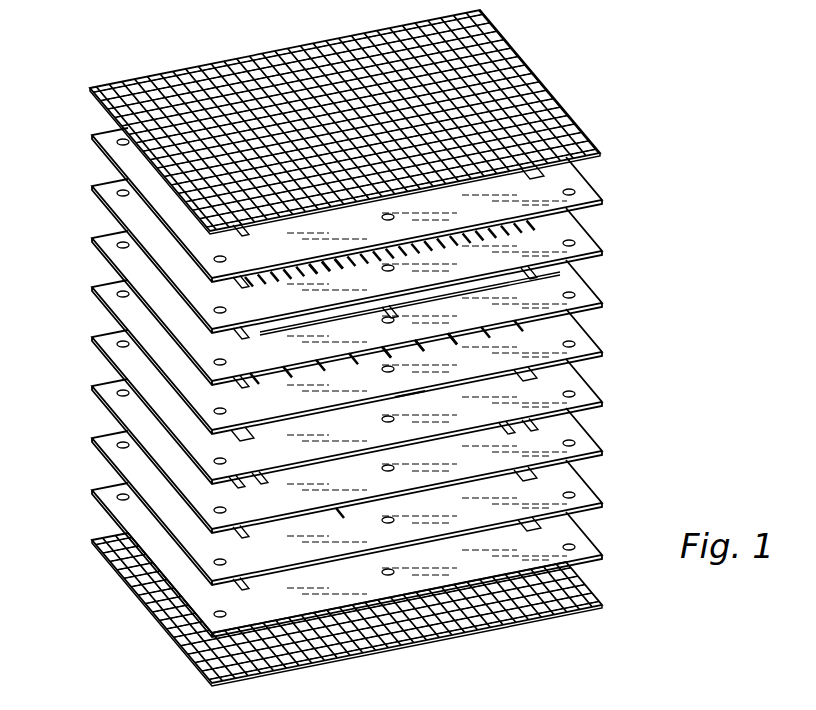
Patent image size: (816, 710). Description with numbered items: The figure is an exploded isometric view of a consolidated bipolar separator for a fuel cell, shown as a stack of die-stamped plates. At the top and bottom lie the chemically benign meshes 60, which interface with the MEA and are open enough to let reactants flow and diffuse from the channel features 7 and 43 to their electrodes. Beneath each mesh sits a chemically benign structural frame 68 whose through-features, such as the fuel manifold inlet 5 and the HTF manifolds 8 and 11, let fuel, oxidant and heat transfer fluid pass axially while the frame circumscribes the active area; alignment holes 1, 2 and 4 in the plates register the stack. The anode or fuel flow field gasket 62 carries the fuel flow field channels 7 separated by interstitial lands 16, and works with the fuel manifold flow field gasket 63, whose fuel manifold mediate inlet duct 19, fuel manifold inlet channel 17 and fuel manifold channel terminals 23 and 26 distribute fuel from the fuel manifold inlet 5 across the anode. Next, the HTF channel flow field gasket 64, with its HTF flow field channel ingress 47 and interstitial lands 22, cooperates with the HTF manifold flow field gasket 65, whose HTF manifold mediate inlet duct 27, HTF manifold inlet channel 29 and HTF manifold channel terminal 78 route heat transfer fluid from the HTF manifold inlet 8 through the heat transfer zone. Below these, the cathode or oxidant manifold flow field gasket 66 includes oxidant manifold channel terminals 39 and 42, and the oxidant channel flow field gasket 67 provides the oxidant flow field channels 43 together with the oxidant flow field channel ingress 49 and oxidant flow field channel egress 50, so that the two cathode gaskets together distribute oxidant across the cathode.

The chemically benign mesh 60 is at (115, 85).
The chemically benign structural frame 68 is at (92, 138).
The fuel flow field gasket 62 is at (92, 187).
The fuel manifold flow field gasket 63 is at (92, 240).
The HTF channel flow field gasket 64 is at (92, 288).
The HTF manifold flow field gasket 65 is at (92, 338).
The oxidant manifold flow field gasket 66 is at (92, 387).
The oxidant channel flow field gasket 67 is at (92, 438).
The alignment hole 2 is at (123, 139).
The alignment hole 1 is at (226, 260).
The fuel manifold inlet 5 is at (390, 217).
The alignment hole 4 is at (569, 192).
The HTF manifold inlet 8 is at (232, 237).
The countercurrent HTF manifold outlet 11 is at (530, 185).
The interstitial lands 16 is at (430, 250).
The fuel flow field channels 7 is at (316, 272).
The fuel manifold inlet channel 17 is at (320, 320).
The fuel manifold mediate inlet duct 19 is at (398, 318).
The fuel manifold channel terminal 26 is at (533, 283).
The fuel manifold channel terminal 23 is at (246, 340).
The interstitial lands 22 is at (322, 375).
The HTF flow field channel ingress 47 is at (418, 352).
The HTF manifold mediate inlet duct 27 is at (255, 445).
The HTF manifold inlet channel 29 is at (412, 400).
The HTF manifold channel terminal 78 is at (522, 383).
The oxidant manifold channel terminal 42 is at (503, 436).
The oxidant manifold channel terminal 39 is at (258, 485).
The oxidant flow field channel egress 50 is at (522, 484).
The oxidant flow field channels 43 is at (338, 510).
The oxidant flow field channel ingress 49 is at (258, 528).